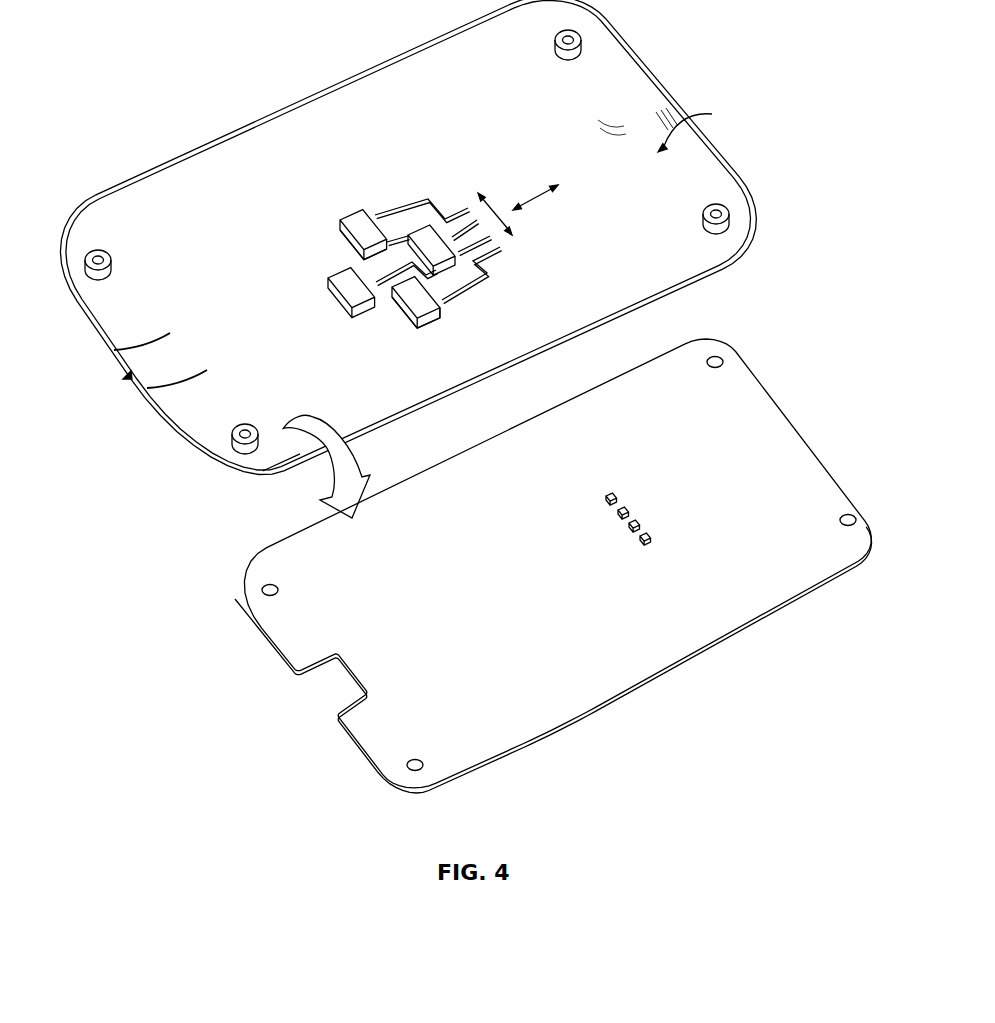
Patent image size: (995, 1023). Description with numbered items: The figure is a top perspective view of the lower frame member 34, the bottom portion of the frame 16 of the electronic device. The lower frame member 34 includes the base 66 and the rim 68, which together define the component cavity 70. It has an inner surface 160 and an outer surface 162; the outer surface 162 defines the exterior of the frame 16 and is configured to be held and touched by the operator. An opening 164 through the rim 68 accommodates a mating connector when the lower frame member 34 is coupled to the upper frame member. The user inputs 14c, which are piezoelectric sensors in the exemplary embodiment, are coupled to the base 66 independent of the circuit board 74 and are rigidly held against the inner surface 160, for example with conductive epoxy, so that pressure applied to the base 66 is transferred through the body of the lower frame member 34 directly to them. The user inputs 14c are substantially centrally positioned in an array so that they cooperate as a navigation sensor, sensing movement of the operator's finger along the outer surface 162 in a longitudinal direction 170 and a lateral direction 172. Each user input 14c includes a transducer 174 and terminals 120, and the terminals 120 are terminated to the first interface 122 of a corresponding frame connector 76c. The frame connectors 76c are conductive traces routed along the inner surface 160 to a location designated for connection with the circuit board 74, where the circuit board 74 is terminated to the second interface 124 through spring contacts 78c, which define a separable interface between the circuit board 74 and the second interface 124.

The frame 16 is at (285, 124).
The lower frame member 34 is at (342, 112).
The base 66 is at (603, 107).
The rim 68 is at (657, 113).
The component cavity 70 is at (698, 126).
The user inputs 14c is at (363, 228).
The transducer 174 is at (355, 240).
The lateral direction 172 is at (505, 200).
The longitudinal direction 170 is at (541, 198).
The second interface 124 is at (495, 255).
The frame connectors 76c is at (488, 273).
The first interface 122 is at (443, 296).
The terminals 120 is at (407, 311).
The opening 164 is at (124, 376).
The inner surface 160 is at (202, 415).
The outer surface 162 is at (292, 472).
The circuit board 74 is at (730, 383).
The spring contacts 78c is at (647, 542).